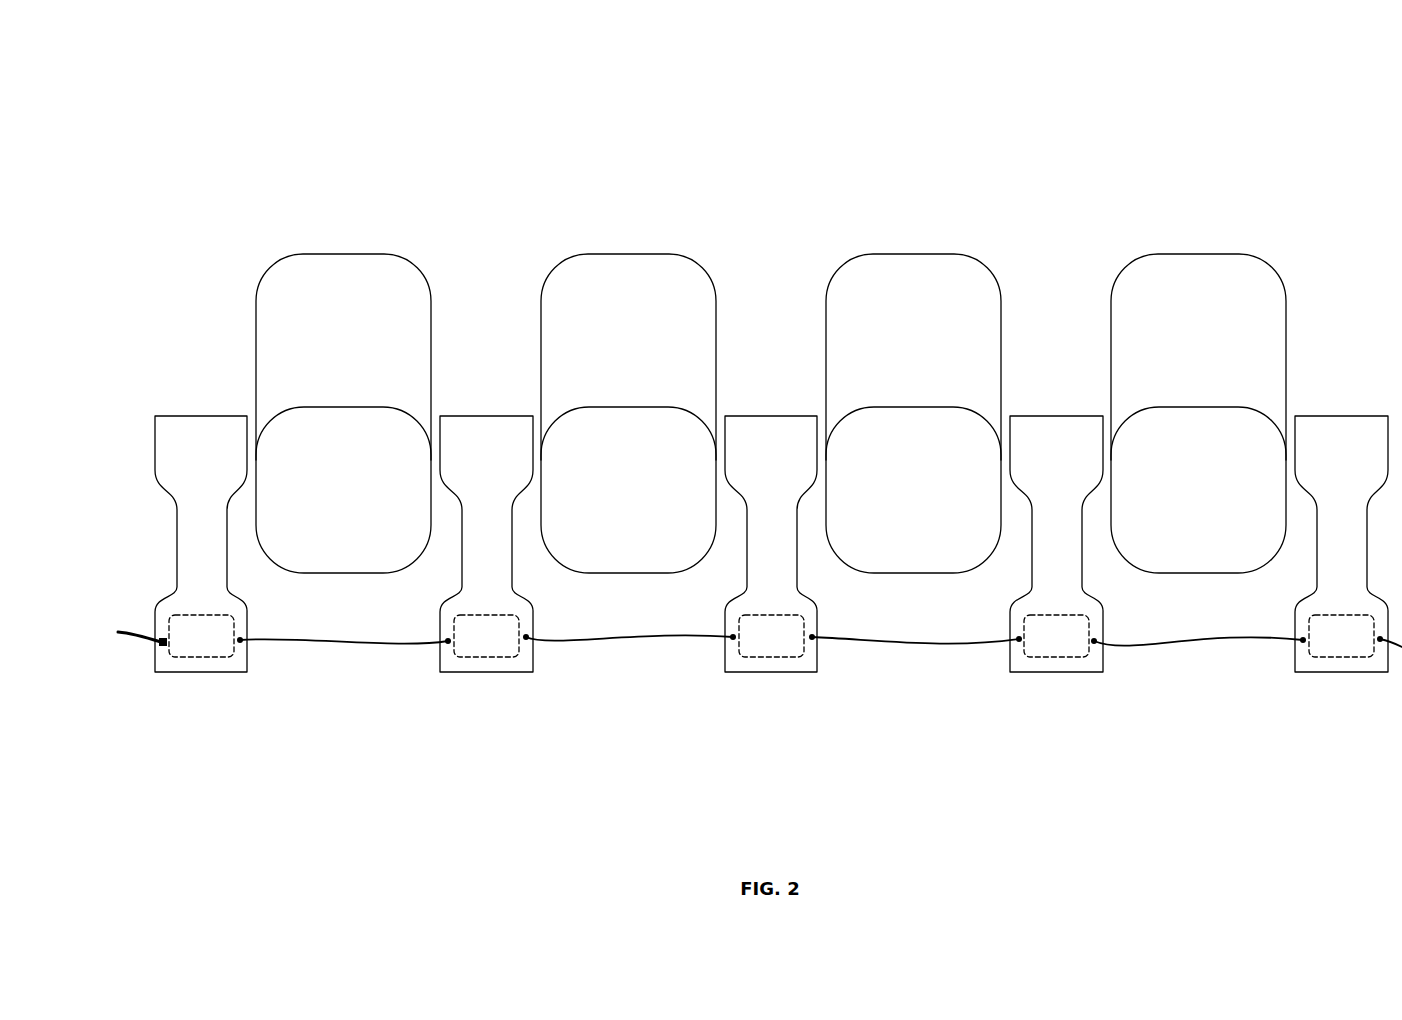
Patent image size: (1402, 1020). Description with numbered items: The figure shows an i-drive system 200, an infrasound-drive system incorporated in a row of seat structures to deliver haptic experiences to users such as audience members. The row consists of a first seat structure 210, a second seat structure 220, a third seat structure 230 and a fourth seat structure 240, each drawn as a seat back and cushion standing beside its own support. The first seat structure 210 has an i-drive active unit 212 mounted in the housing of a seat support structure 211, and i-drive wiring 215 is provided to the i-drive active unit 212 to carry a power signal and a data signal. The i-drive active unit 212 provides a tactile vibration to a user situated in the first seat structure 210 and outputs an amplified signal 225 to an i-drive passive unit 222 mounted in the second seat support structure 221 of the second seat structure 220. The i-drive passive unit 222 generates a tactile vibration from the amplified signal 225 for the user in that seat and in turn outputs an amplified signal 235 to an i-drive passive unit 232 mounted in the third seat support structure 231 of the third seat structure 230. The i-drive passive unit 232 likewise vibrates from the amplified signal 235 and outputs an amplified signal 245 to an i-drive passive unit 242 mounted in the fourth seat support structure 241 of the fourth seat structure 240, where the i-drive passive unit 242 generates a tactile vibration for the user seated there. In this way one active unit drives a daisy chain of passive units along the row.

The i-drive system 200 is at (1295, 71).
The first seat structure 210 is at (247, 603).
The second seat structure 220 is at (533, 603).
The third seat structure 230 is at (817, 603).
The fourth seat structure 240 is at (1103, 603).
The seat support structure 211 is at (212, 672).
The second seat support structure 221 is at (488, 672).
The third seat support structure 231 is at (785, 672).
The fourth seat support structure 241 is at (1058, 672).
The i-drive active unit 212 is at (180, 613).
The i-drive passive unit 222 is at (453, 616).
The i-drive passive unit 232 is at (739, 616).
The i-drive passive unit 242 is at (1024, 616).
The i-drive wiring 215 is at (748, 692).
The amplified signal 225 is at (348, 642).
The amplified signal 235 is at (648, 640).
The amplified signal 245 is at (913, 640).